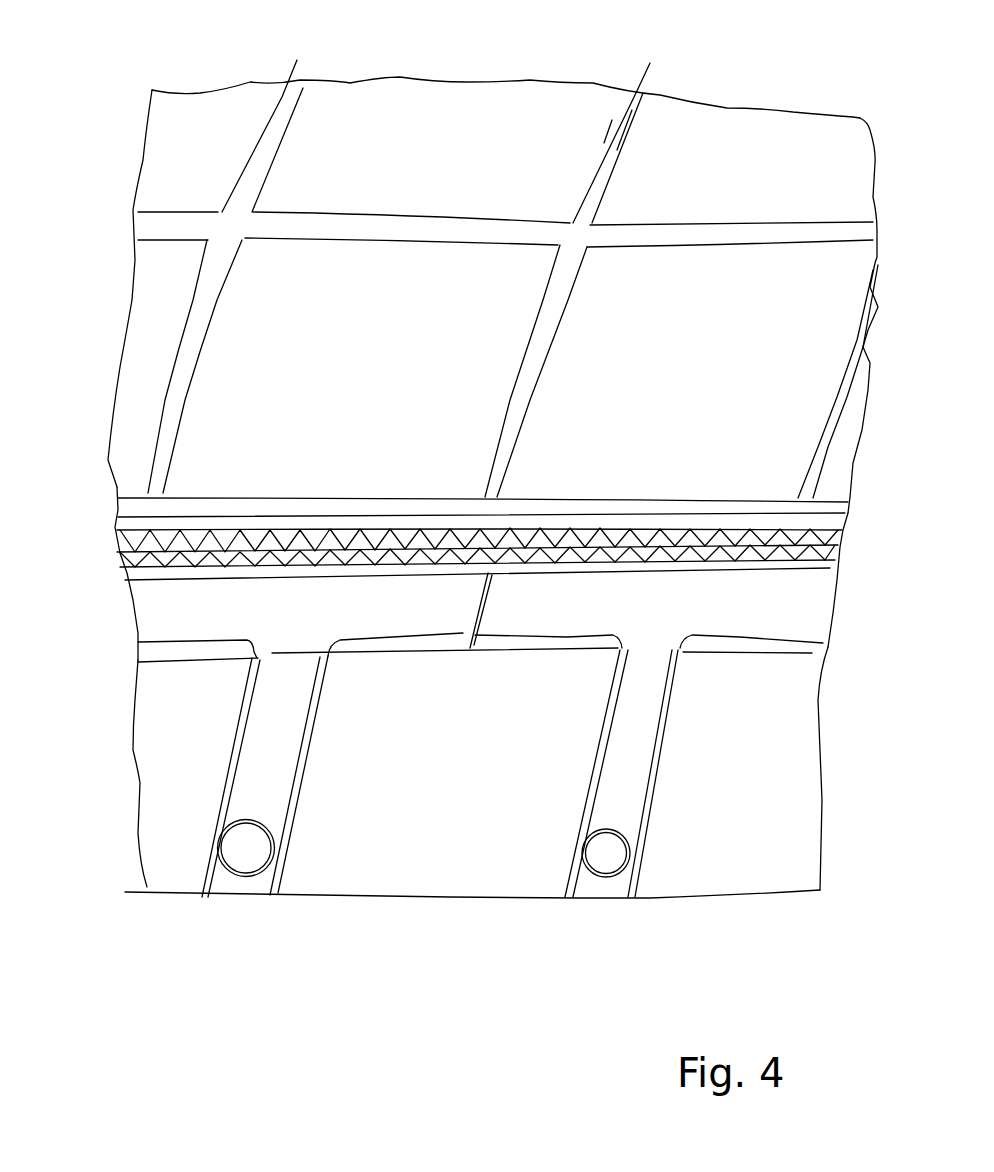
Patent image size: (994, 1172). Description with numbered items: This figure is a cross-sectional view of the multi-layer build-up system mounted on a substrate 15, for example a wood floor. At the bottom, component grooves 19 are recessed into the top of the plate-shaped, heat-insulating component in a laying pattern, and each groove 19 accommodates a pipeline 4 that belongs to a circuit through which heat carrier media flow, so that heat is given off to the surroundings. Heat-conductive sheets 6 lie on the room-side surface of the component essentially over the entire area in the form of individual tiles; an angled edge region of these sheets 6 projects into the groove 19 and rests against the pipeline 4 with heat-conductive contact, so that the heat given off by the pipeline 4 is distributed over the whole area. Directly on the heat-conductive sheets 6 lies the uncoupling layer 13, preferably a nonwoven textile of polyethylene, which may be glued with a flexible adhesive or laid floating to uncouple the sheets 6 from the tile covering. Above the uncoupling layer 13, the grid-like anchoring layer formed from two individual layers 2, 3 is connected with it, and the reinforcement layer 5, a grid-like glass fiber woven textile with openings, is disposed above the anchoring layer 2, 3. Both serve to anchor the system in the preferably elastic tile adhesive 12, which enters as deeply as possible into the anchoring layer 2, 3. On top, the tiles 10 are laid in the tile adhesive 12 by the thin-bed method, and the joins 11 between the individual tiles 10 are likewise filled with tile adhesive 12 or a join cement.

The anchoring layer individual layer 2 is at (817, 540).
The anchoring layer individual layer 3 is at (820, 552).
The pipeline 4 is at (240, 850).
The reinforcement layer 5 is at (125, 527).
The heat-conductive sheets 6 is at (163, 613).
The tiles 10 is at (475, 110).
The joins 11 is at (282, 97).
The tile adhesive 12 is at (122, 502).
The uncoupling layer 13 is at (138, 575).
The substrate 15 is at (172, 868).
The component grooves 19 is at (260, 880).